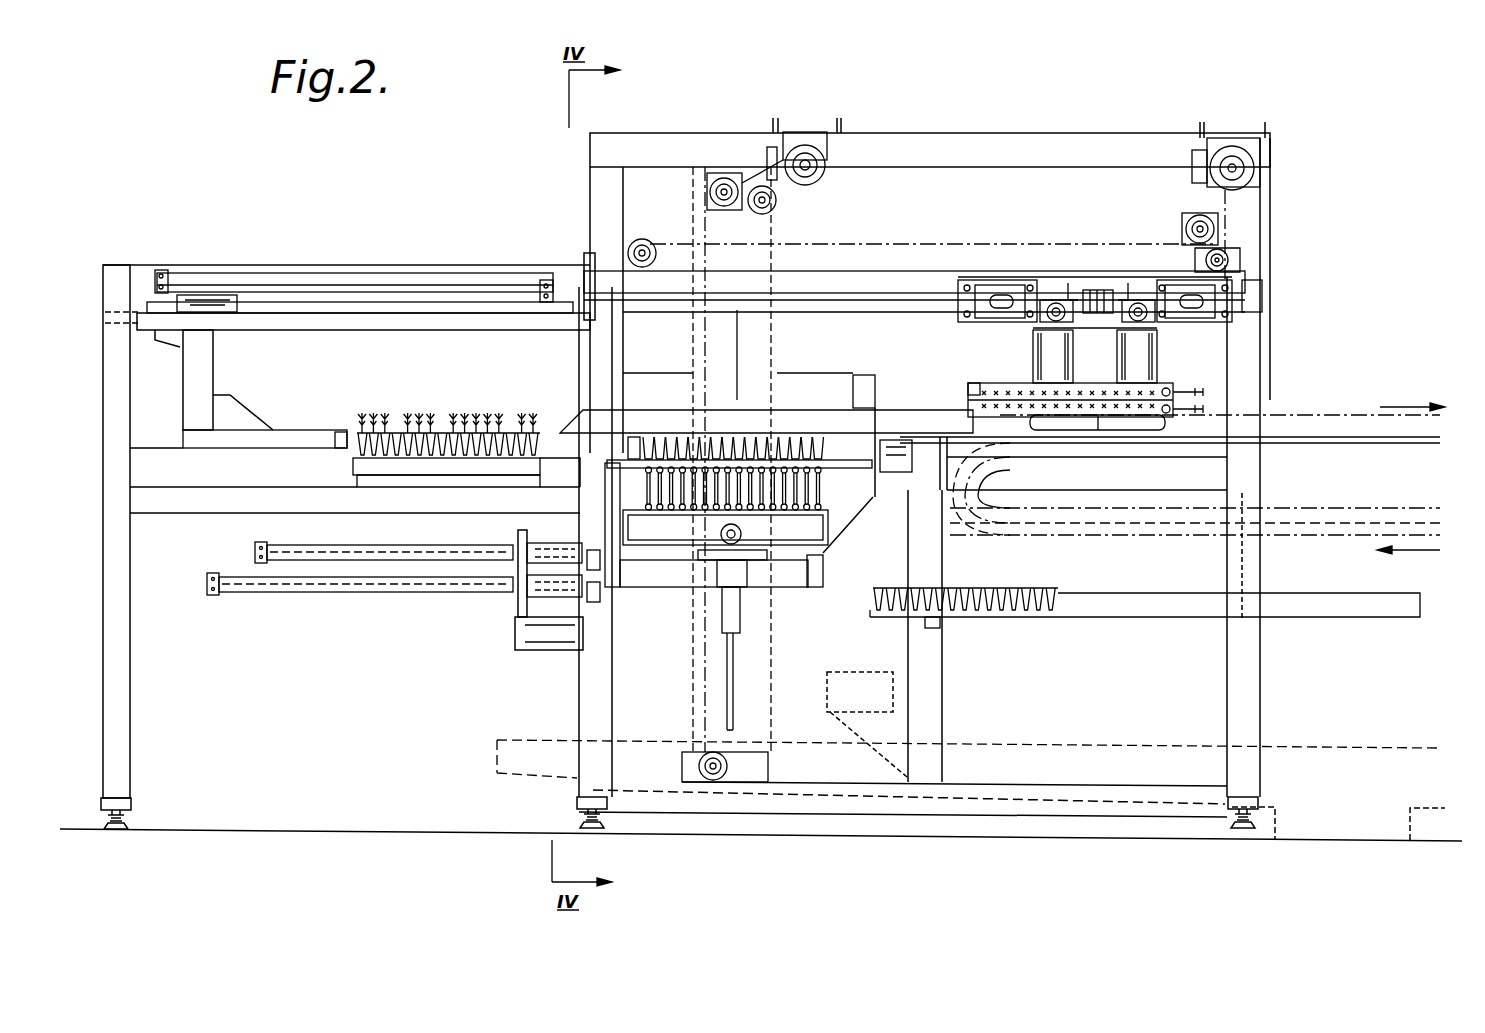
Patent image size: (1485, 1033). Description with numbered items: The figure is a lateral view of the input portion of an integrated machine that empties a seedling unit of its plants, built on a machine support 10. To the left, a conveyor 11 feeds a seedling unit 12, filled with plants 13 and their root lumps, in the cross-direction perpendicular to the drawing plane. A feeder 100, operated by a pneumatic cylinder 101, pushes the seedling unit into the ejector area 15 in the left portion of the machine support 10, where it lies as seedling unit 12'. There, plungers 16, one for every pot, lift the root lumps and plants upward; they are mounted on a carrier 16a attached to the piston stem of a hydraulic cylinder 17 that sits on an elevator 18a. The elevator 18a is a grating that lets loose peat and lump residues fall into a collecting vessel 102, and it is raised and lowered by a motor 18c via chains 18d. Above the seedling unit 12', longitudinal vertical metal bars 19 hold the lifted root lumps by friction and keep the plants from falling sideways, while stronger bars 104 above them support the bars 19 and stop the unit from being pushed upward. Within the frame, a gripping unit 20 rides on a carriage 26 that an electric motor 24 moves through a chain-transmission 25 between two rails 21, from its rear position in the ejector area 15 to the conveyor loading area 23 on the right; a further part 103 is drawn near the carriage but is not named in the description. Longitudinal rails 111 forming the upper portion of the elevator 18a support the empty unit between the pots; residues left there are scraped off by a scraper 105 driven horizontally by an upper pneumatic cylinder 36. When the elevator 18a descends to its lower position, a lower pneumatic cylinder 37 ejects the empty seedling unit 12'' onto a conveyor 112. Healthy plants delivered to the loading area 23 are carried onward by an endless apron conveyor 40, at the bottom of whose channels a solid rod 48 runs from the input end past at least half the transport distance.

The machine support 10 is at (593, 675).
The conveyor 11 is at (410, 470).
The seedling unit 12 is at (431, 403).
The seedling unit in ejector area 12' is at (652, 394).
The empty seedling unit 12'' is at (974, 589).
The plants 13 is at (397, 407).
The ejector area 15 is at (676, 626).
The plungers 16 is at (823, 490).
The carrier 16a is at (827, 532).
The hydraulic cylinder 17 is at (745, 610).
The elevator 18a is at (823, 577).
The motor 18c is at (820, 177).
The chains 18d is at (737, 335).
The longitudinal vertical metal bars 19 is at (813, 410).
The gripping unit 20 is at (1189, 376).
The rails 21 is at (913, 297).
The conveyor loading area 23 is at (1028, 374).
The electric motor 24 is at (1262, 170).
The chain-transmission 25 is at (1118, 245).
The carriage 26 is at (1078, 283).
The upper pneumatic cylinder 36 is at (380, 558).
The lower pneumatic cylinder 37 is at (398, 588).
The apron conveyor 40 is at (1284, 418).
The solid rod 48 is at (1327, 433).
The feeder 100 is at (337, 430).
The pneumatic cylinder 101 is at (366, 273).
The collecting vessel 102 is at (497, 750).
The carriage plate 103 is at (1033, 333).
The stronger bars 104 is at (852, 405).
The scraper 105 is at (607, 567).
The longitudinal rails 111 is at (880, 405).
The conveyor 112 is at (1103, 605).